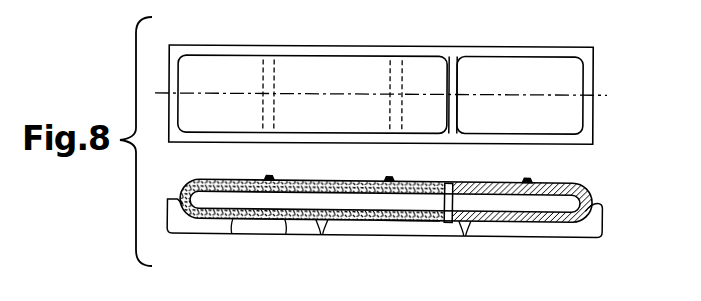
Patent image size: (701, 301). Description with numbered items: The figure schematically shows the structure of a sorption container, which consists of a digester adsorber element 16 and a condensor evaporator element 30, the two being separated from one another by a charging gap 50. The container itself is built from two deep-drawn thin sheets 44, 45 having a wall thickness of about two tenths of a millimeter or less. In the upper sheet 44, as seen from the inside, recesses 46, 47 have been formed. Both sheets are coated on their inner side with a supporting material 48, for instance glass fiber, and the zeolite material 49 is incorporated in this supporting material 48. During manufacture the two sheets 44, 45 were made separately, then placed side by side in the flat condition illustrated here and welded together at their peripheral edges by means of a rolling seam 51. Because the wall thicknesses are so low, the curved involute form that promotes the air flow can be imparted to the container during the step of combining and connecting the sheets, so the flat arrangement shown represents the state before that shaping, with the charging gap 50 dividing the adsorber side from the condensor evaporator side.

The digester adsorber element 16 is at (310, 51).
The condensor evaporator element 30 is at (500, 54).
The upper sheet 44 is at (223, 180).
The lower sheet 45 is at (232, 238).
The recess 46 is at (270, 178).
The recess 47 is at (528, 181).
The supporting material 48 is at (411, 223).
The zeolite material 49 is at (288, 225).
The charging gap 50 is at (453, 68).
The rolling seam 51 is at (591, 78).